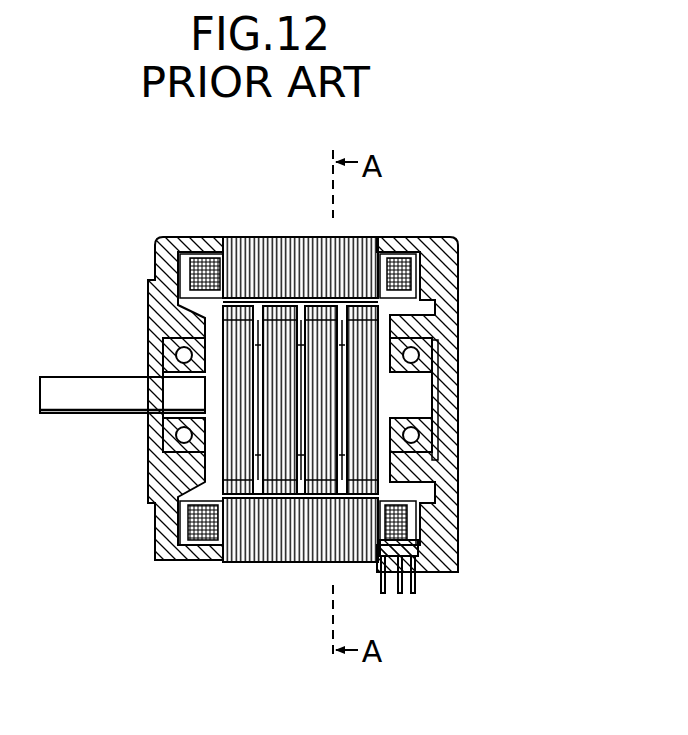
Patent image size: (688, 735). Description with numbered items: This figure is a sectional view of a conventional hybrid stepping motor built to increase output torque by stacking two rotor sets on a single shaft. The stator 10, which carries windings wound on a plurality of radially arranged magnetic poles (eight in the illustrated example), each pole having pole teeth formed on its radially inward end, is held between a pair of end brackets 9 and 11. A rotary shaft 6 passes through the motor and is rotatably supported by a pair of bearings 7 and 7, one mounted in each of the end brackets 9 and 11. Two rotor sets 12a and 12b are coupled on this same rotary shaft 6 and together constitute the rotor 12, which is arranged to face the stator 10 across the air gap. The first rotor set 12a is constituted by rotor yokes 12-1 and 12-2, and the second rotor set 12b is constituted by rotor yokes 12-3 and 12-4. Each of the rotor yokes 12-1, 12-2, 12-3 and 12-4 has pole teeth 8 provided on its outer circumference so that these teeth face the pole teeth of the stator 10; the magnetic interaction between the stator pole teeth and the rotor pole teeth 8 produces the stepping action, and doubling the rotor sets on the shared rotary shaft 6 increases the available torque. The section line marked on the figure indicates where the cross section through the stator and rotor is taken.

The rotary shaft 6 is at (72, 377).
The bearing 7 is at (168, 327).
The pole teeth 8 is at (247, 268).
The end bracket 9 is at (184, 234).
The stator 10 is at (296, 234).
The end bracket 11 is at (419, 235).
The rotor 12 is at (295, 530).
The rotor set 12a is at (242, 540).
The rotor set 12b is at (338, 500).
The rotor yoke 12-1 is at (233, 467).
The rotor yoke 12-2 is at (270, 540).
The rotor yoke 12-3 is at (335, 500).
The rotor yoke 12-4 is at (367, 460).